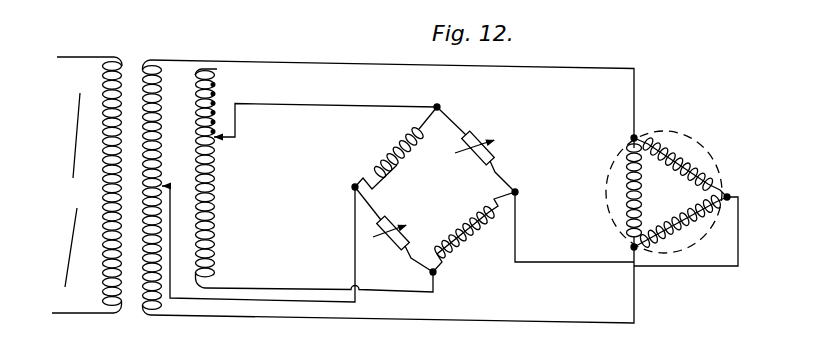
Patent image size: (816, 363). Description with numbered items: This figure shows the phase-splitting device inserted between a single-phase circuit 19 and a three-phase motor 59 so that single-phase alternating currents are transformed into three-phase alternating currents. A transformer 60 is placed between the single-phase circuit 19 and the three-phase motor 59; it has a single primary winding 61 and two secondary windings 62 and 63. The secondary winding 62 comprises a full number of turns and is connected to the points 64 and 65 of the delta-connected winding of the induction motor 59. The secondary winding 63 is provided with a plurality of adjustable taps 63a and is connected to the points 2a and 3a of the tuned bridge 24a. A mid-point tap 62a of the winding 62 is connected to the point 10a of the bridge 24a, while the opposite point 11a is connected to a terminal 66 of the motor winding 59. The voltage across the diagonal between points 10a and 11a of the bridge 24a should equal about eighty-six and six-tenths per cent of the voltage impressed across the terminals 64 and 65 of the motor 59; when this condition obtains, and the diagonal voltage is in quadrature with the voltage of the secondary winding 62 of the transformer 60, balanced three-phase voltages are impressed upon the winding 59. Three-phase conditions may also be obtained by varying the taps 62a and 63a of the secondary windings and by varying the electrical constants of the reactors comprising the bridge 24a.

The single-phase circuit 19 is at (76, 190).
The transformer 60 is at (128, 293).
The primary winding 61 is at (118, 57).
The secondary winding 62 is at (158, 50).
The mid-point tap 62a is at (167, 181).
The secondary winding 63 is at (206, 68).
The adjustable taps 63a is at (215, 95).
The tuned bridge 24a is at (437, 185).
The point of the bridge 2a is at (444, 98).
The point of the bridge 3a is at (437, 272).
The point of the bridge 10a is at (340, 189).
The point of the bridge 11a is at (531, 194).
The three-phase motor 59 is at (677, 194).
The point of the delta-connected winding 64 is at (636, 138).
The point of the delta-connected winding 65 is at (632, 248).
The terminal of the three-phase motor winding 66 is at (729, 197).